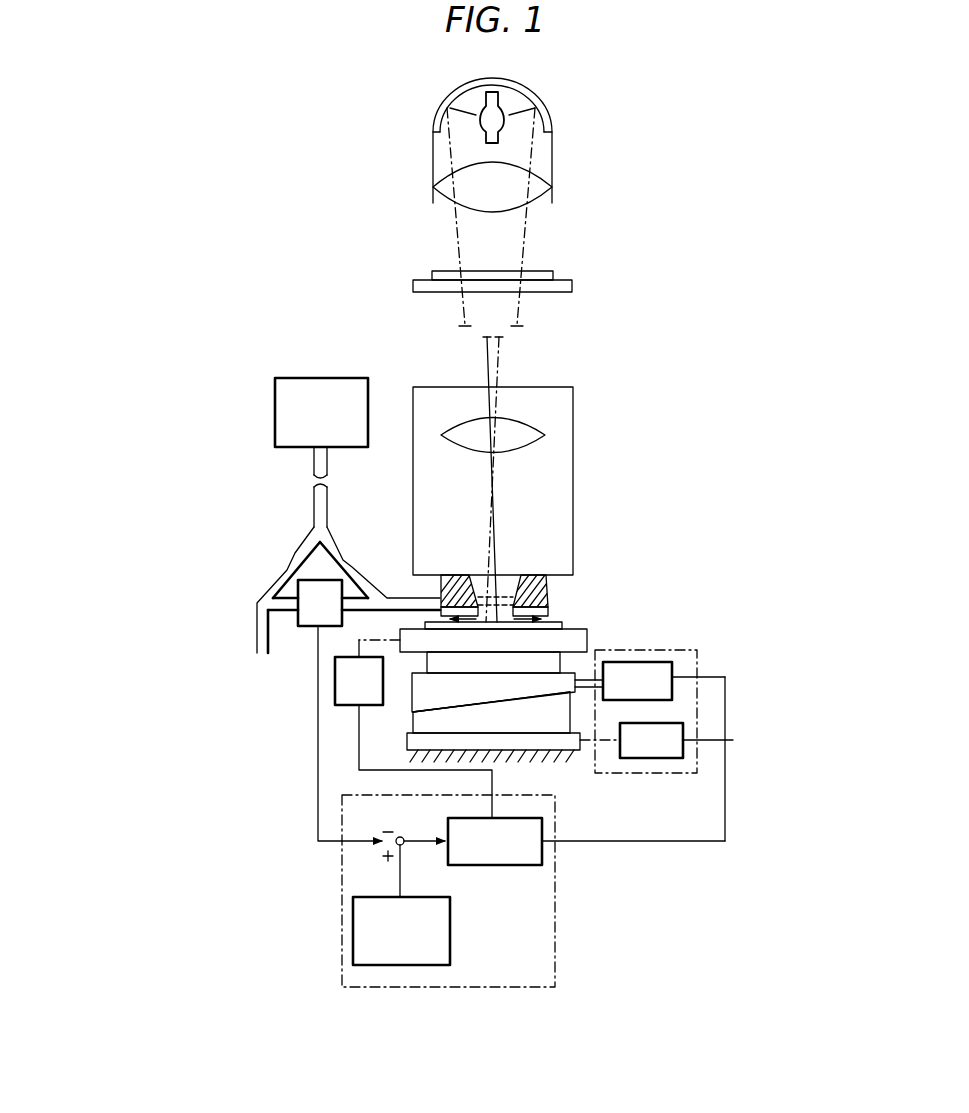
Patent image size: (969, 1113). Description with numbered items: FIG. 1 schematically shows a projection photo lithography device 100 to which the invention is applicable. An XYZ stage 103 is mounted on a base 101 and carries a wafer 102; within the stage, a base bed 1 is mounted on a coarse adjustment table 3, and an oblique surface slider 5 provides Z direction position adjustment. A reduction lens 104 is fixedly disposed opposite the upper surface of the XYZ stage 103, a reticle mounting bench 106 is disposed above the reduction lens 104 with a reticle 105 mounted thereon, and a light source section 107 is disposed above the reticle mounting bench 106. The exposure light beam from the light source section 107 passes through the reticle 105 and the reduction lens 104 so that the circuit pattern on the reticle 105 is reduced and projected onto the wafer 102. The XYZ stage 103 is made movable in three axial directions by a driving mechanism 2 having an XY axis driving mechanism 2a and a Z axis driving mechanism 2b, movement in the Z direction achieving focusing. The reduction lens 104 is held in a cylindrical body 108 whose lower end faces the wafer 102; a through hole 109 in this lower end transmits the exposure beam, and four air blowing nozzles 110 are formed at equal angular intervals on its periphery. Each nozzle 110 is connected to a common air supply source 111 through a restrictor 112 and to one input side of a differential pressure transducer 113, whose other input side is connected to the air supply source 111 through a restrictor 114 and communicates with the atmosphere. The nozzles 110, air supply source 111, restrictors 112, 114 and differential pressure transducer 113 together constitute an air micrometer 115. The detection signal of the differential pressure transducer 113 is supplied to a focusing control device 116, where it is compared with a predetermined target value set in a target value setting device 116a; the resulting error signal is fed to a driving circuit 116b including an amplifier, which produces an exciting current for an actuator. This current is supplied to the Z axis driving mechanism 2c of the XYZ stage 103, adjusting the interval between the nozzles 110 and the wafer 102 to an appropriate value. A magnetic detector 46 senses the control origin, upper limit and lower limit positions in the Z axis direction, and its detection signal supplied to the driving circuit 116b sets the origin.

The projection photo lithography device 100 is at (584, 227).
The light source section 107 is at (552, 160).
The reticle 105 is at (553, 271).
The reticle mounting bench 106 is at (558, 293).
The reduction lens 104 is at (532, 428).
The cylindrical body 108 is at (575, 456).
The through hole 109 is at (548, 592).
The air blowing nozzles 110 is at (548, 601).
The wafer 102 is at (560, 622).
The XYZ stage 103 is at (592, 640).
The base bed 1 is at (420, 715).
The oblique surface slider 5 is at (513, 690).
The coarse adjustment table 3 is at (574, 746).
The base 101 is at (410, 758).
The Z axis driving mechanism 2c is at (673, 668).
The XY axis driving mechanism 2a is at (688, 740).
The Z axis driving mechanism 2b is at (651, 740).
The driving mechanism 2 is at (686, 773).
The detector 46 is at (347, 707).
The air supply source 111 is at (291, 378).
The air micrometer 115 is at (286, 538).
The restrictor 114 is at (289, 565).
The restrictor 112 is at (355, 558).
The differential pressure transducer 113 is at (302, 626).
The focusing control device 116 is at (556, 909).
The target value setting device 116a is at (450, 952).
The driving circuit 116b is at (512, 865).